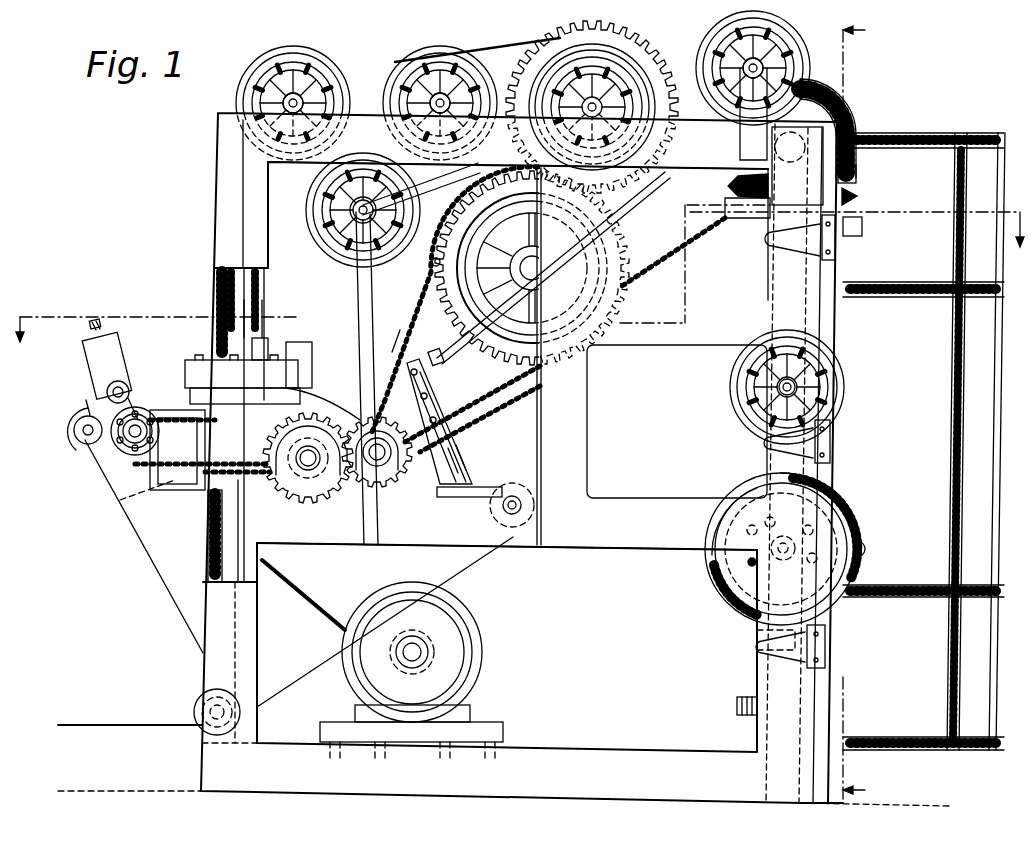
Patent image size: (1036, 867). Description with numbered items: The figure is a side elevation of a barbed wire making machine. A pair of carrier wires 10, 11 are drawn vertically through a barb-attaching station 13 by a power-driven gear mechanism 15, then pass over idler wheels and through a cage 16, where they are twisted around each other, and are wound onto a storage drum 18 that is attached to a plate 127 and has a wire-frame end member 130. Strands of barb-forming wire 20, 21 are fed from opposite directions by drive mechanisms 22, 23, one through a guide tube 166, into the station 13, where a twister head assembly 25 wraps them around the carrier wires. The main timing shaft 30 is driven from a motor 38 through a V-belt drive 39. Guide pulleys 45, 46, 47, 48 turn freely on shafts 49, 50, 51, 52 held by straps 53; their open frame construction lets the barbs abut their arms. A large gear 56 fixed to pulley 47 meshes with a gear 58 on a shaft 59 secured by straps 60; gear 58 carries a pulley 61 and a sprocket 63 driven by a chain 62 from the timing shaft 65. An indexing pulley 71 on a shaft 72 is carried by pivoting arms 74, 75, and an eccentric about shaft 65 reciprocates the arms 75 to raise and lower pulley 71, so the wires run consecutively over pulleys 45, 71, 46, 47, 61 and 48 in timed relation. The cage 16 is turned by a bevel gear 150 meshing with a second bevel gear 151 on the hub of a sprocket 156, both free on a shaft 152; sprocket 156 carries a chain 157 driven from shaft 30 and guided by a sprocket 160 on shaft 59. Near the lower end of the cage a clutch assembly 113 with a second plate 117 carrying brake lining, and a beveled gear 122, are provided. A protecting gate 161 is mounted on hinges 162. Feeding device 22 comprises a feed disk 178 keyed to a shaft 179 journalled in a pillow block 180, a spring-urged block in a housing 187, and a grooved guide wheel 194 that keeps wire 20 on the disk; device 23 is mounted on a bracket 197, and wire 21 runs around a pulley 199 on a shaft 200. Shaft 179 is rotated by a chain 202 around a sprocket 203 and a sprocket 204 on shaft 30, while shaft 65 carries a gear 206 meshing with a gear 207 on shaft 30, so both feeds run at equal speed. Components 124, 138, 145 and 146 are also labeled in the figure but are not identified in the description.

The carrier wire 10 is at (250, 580).
The carrier wire 11 is at (255, 582).
The barb-attaching station 13 is at (226, 356).
The power-driven gear mechanism 15 is at (534, 54).
The cage 16 is at (832, 312).
The storage drum 18 is at (854, 502).
The barb-forming wire 20 is at (137, 532).
The barb-forming wire 21 is at (450, 578).
The drive mechanism 22 is at (84, 384).
The drive mechanism 23 is at (448, 380).
The twister head assembly 25 is at (240, 392).
The main timing shaft 30 is at (318, 466).
The motor 38 is at (482, 652).
The V-belt drive 39 is at (336, 626).
The guide pulley 45 is at (298, 48).
The guide pulley 46 is at (430, 50).
The guide pulley 47 is at (586, 40).
The guide pulley 48 is at (766, 68).
The shaft 49 is at (284, 100).
The shaft 50 is at (432, 100).
The shaft 51 is at (642, 76).
The shaft 52 is at (770, 48).
The strap 53 is at (262, 70).
The large gear 56 is at (630, 52).
The gear 58 is at (432, 264).
The shaft 59 is at (606, 252).
The strap 60 is at (440, 360).
The pulley 61 is at (456, 318).
The chain 62 is at (496, 410).
The sprocket 63 is at (412, 294).
The timing shaft 65 is at (386, 462).
The indexing pulley 71 is at (310, 208).
The shaft 72 is at (354, 214).
The pivoting arm 74 is at (430, 180).
The pivoting arm 75 is at (362, 290).
The clutch assembly 113 is at (720, 550).
The second plate 117 is at (750, 566).
The beveled gear 122 is at (858, 562).
The toothed segment 124 is at (740, 574).
The plate 127 is at (858, 536).
The end member 130 is at (868, 550).
The stop block 138 is at (735, 705).
The spoked wheel 145 is at (846, 370).
The hub 146 is at (816, 386).
The bevel gear 150 is at (736, 188).
The second bevel gear 151 is at (852, 114).
The shaft 152 is at (852, 164).
The sprocket 156 is at (852, 186).
The chain 157 is at (674, 186).
The guide sprocket 160 is at (594, 348).
The protecting gate 161 is at (884, 436).
The hinge 162 is at (836, 258).
The guide tube 166 is at (212, 380).
The feed disk 178 is at (110, 434).
The shaft 179 is at (120, 442).
The pillow block 180 is at (130, 446).
The housing 187 is at (88, 356).
The guide wheel 194 is at (74, 430).
The bracket 197 is at (470, 456).
The pulley 199 is at (536, 512).
The shaft 200 is at (516, 514).
The chain 202 is at (190, 492).
The sprocket 203 is at (120, 494).
The sprocket 204 is at (332, 498).
The gear 206 is at (440, 498).
The gear 207 is at (356, 368).